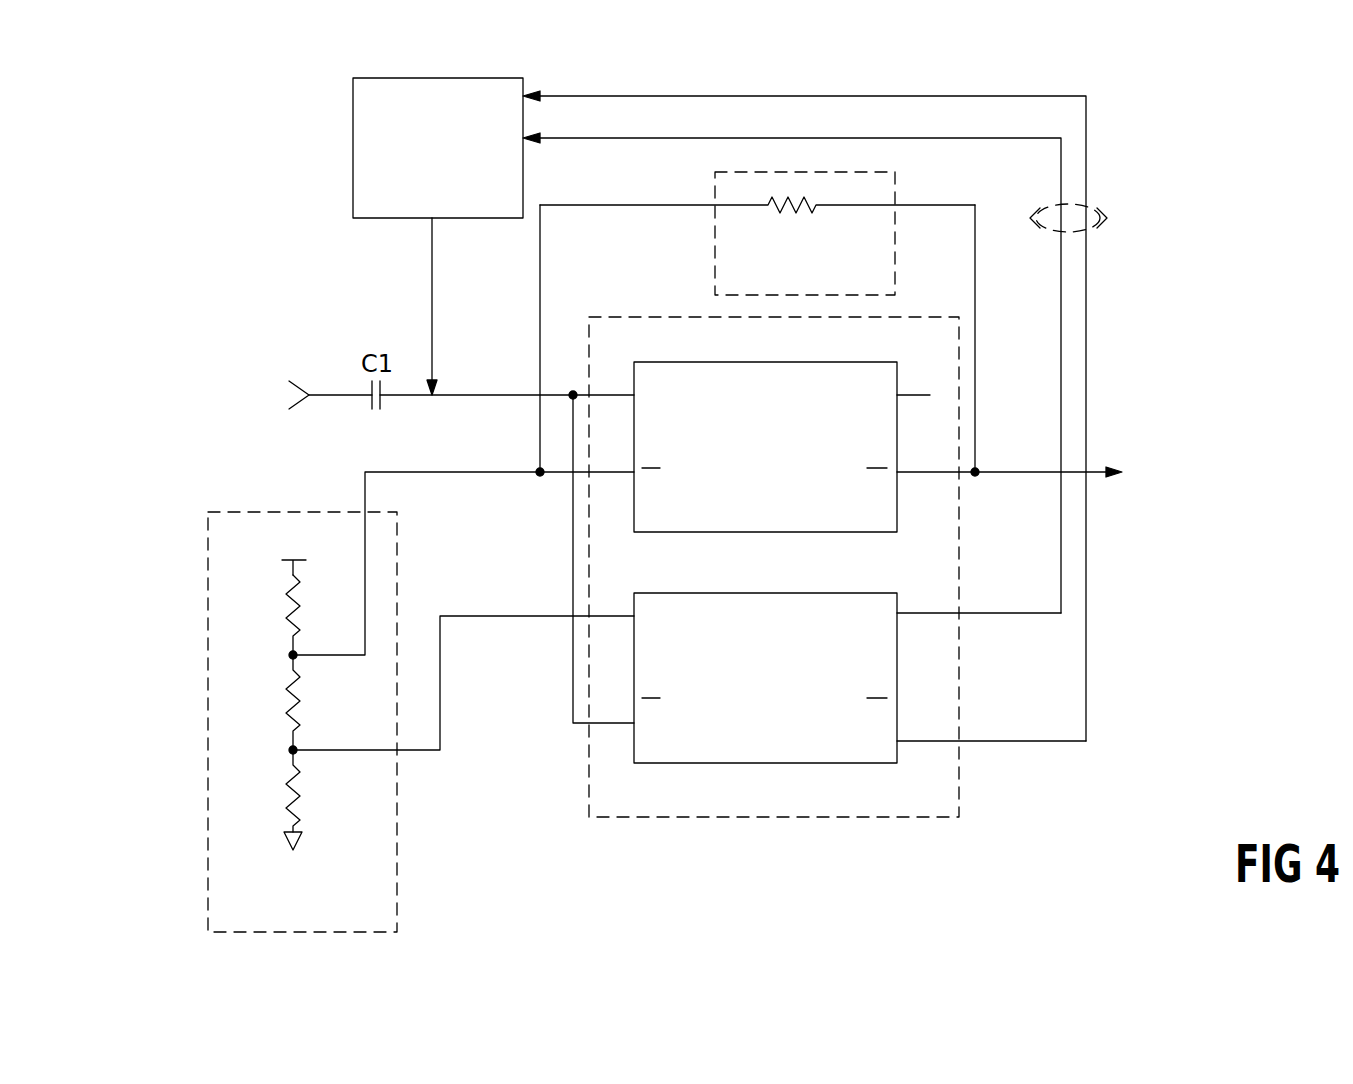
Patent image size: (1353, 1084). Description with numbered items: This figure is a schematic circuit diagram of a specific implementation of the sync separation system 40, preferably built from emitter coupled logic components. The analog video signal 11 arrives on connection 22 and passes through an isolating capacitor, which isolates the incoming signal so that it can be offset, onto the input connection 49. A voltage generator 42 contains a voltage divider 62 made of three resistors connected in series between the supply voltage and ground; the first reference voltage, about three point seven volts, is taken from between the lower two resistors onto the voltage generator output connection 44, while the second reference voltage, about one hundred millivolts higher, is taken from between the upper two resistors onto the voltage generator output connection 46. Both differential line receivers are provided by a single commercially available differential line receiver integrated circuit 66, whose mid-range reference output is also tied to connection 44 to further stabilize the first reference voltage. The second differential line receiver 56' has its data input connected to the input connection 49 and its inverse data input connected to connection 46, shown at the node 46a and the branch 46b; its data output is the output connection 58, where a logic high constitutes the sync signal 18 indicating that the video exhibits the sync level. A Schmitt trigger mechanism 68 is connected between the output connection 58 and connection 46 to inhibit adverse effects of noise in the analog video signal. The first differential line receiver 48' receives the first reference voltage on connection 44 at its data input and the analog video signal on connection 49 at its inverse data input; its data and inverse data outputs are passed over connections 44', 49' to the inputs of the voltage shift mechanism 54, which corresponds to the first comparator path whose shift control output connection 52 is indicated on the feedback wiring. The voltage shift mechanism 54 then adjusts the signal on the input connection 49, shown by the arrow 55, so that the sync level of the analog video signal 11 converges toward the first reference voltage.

The sync separation system 40 is at (1130, 93).
The analog video signal 11 is at (245, 417).
The connection 22 is at (313, 397).
The input connection 49 is at (505, 514).
The voltage shift mechanism 54 is at (523, 149).
The voltage shift output 55 is at (433, 300).
The first comparator output connection 52 is at (1095, 212).
The Schmitt trigger mechanism 68 is at (893, 172).
The voltage generator output connection 46 is at (451, 474).
The Schmitt trigger feedback node 46a is at (538, 430).
The inverted D input line 46b is at (563, 474).
The voltage generator output connection 44 is at (463, 655).
The second differential line receiver 56' is at (782, 426).
The first differential line receiver 48' is at (765, 658).
The output connection 58 is at (985, 472).
The sync signal 18 is at (1171, 466).
The connection 44' is at (979, 592).
The connection 49' is at (991, 721).
The integrated circuit 66 is at (682, 818).
The voltage generator 42 is at (398, 820).
The voltage divider 62 is at (236, 784).